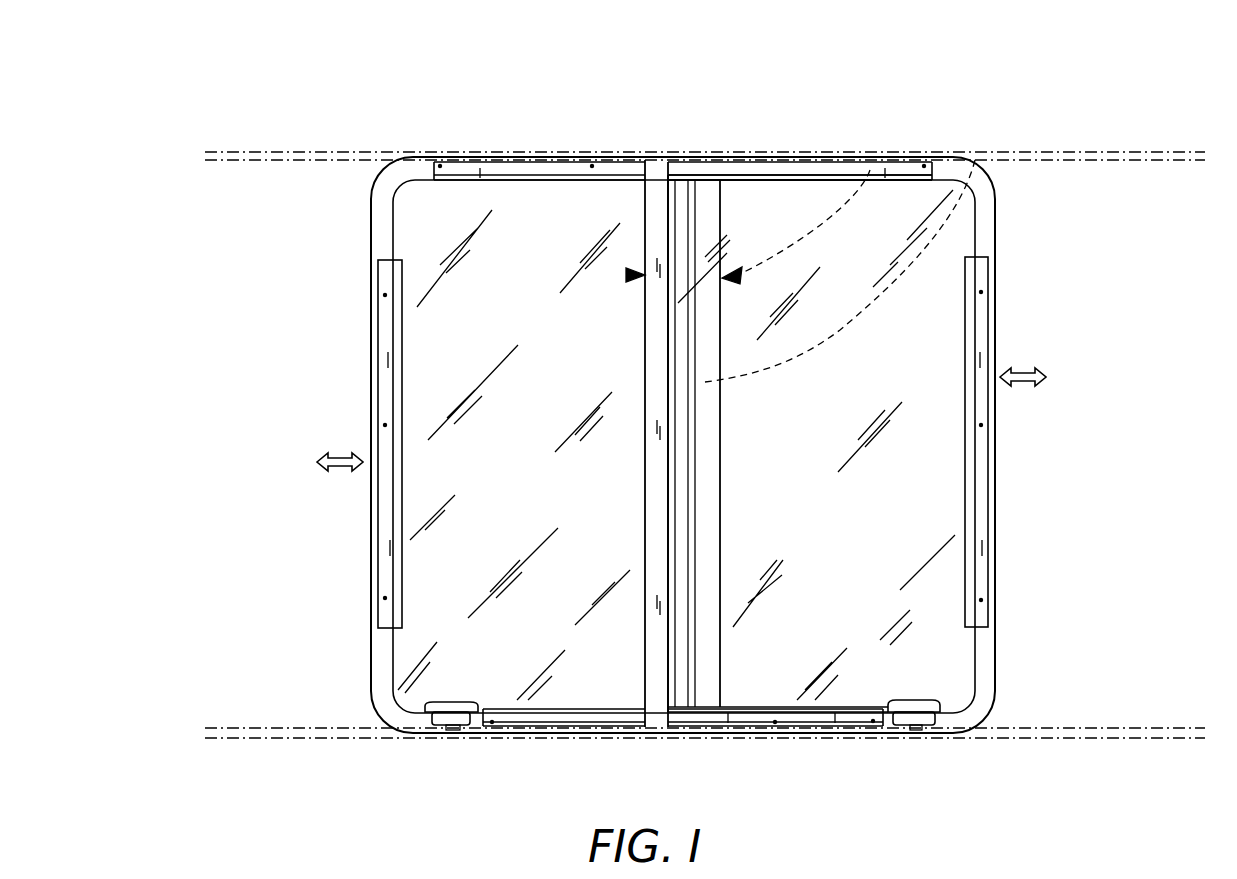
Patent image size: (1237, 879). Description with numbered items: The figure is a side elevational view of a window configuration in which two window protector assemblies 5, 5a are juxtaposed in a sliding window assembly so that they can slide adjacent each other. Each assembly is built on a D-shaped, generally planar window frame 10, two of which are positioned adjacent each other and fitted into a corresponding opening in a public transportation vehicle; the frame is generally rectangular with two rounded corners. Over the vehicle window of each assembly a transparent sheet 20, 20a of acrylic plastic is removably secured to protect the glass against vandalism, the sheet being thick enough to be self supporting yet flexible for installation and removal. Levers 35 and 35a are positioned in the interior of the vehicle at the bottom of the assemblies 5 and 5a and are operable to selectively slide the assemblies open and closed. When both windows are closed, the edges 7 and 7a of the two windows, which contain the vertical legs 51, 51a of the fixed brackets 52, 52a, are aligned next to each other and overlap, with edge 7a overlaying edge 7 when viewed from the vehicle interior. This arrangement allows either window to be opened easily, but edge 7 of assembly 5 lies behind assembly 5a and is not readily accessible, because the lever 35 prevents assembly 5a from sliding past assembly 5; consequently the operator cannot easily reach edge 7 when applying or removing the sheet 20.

The window protector assembly 5 is at (300, 384).
The window protector assembly 5a is at (1060, 312).
The edge 7 is at (720, 217).
The edge 7a is at (645, 212).
The window frame 10 is at (371, 232).
The transparent sheet 20 is at (430, 218).
The transparent sheet 20a is at (895, 623).
The lever 35 is at (463, 723).
The lever 35a is at (925, 708).
The vertical leg 51 is at (975, 160).
The vertical leg 51a is at (655, 345).
The fixed bracket 52 is at (870, 170).
The fixed bracket 52a is at (628, 275).